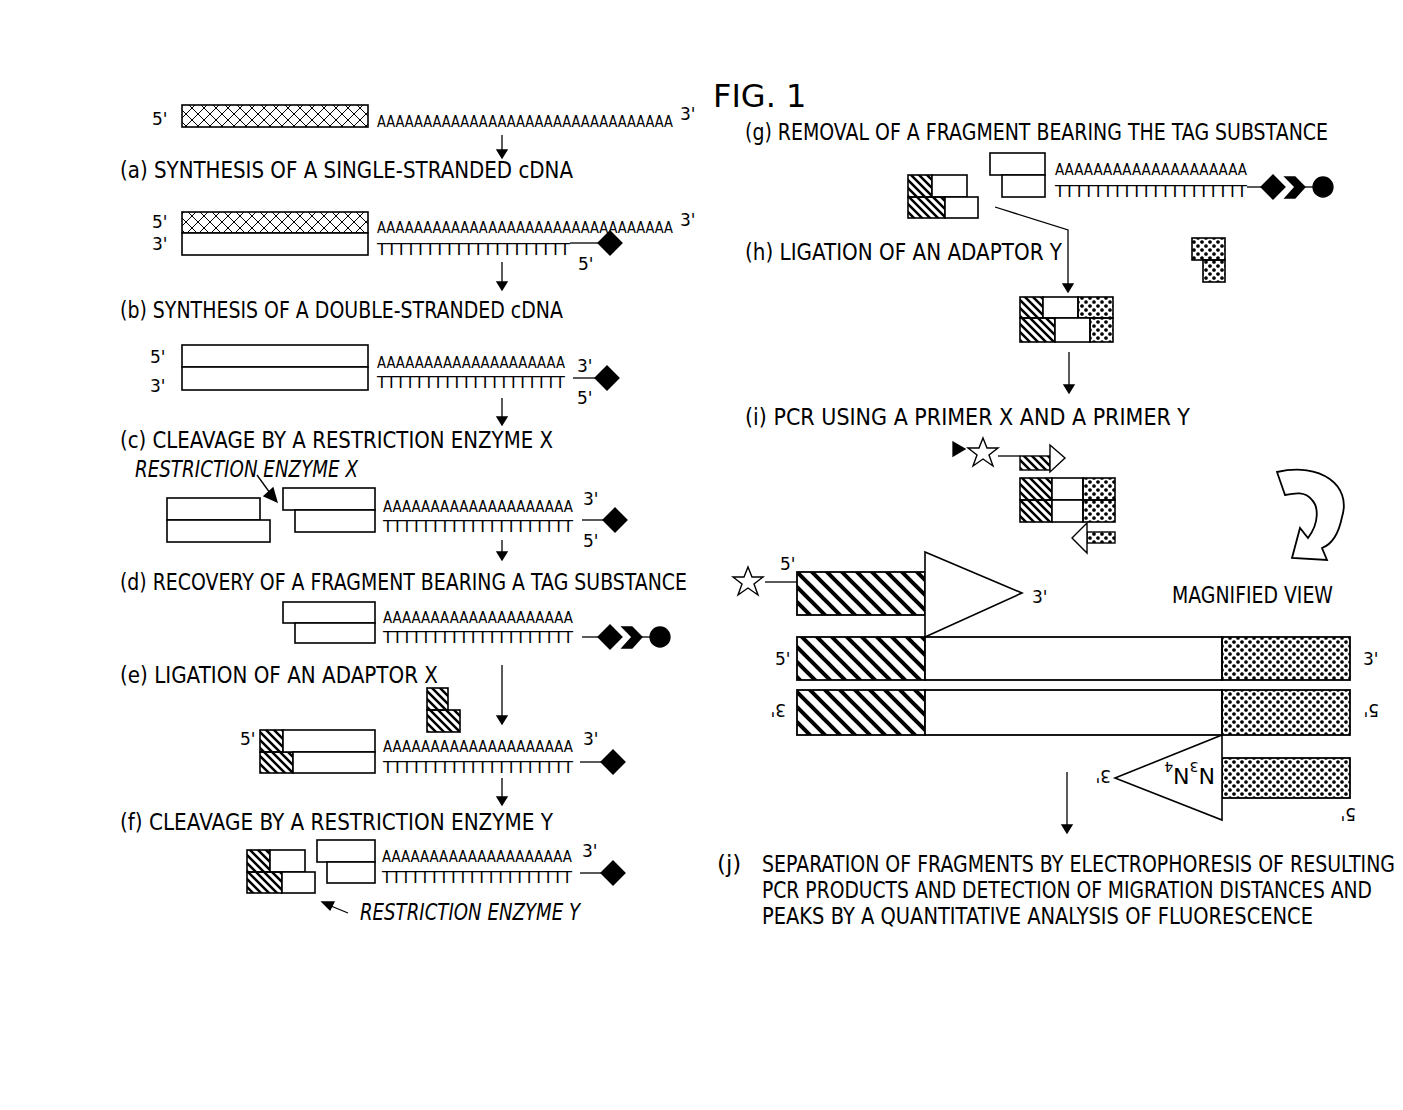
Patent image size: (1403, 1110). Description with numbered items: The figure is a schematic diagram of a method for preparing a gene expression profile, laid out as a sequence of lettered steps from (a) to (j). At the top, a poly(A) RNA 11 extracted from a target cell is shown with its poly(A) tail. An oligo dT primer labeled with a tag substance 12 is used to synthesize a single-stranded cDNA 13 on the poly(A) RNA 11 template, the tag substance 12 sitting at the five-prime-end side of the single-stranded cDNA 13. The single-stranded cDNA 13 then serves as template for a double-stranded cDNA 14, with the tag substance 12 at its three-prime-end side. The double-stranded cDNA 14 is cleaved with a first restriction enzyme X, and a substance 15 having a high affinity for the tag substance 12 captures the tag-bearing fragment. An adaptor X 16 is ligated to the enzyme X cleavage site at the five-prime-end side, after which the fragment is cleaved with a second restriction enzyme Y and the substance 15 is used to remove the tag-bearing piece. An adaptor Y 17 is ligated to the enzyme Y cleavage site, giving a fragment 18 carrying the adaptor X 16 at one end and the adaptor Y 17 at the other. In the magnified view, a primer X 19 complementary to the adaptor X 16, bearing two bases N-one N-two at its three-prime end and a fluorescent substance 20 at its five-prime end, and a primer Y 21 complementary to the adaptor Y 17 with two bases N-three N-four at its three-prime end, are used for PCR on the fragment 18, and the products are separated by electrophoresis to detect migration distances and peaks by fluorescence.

The poly(A) RNA 11 is at (268, 105).
The tag substance 12 is at (620, 250).
The single-stranded cDNA 13 is at (262, 255).
The double-stranded cDNA 14 is at (182, 350).
The substance having a high affinity for the tag substance 15 is at (662, 647).
The adaptor X 16 is at (427, 697).
The adaptor Y 17 is at (1192, 250).
The fragment of a double-stranded sequence 18 is at (1085, 319).
The primer X 19 is at (1020, 463).
The fluorescent substance 20 is at (953, 449).
The primer Y 21 is at (1130, 536).